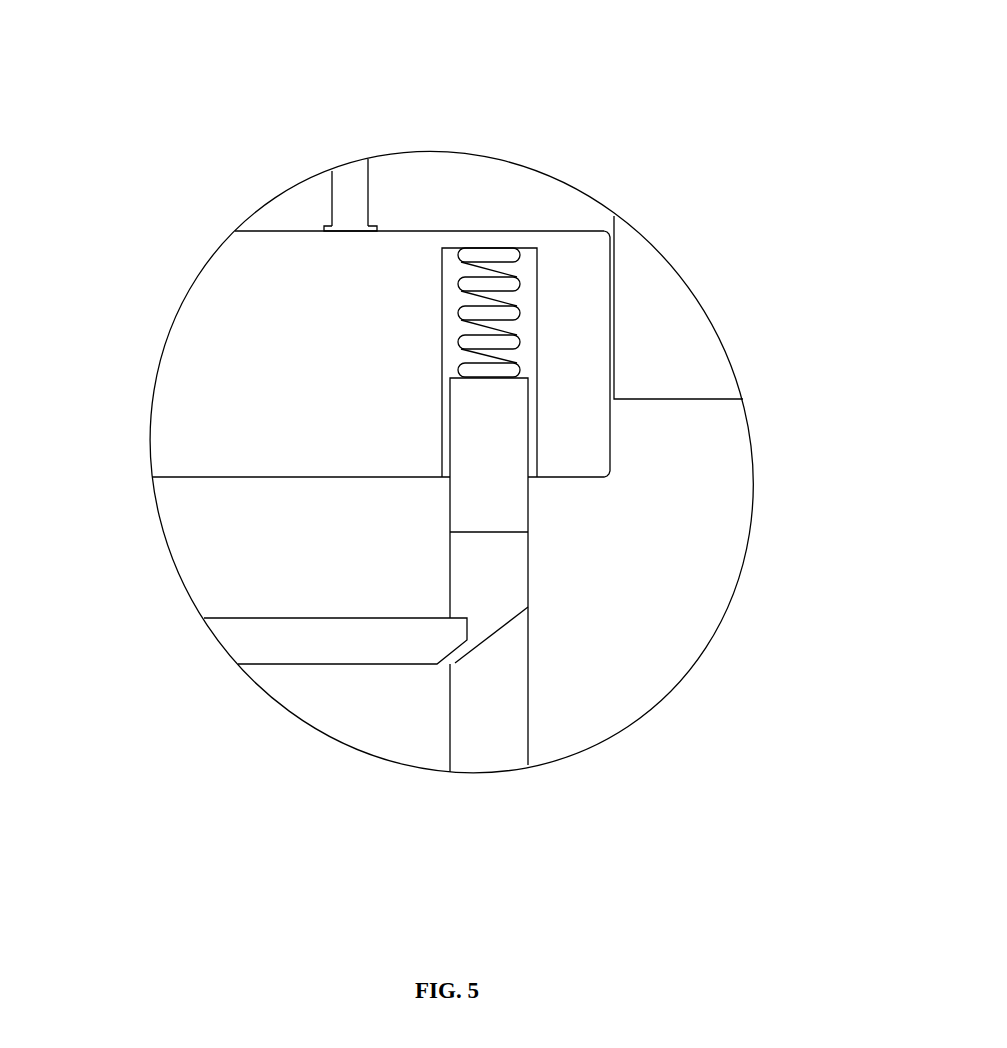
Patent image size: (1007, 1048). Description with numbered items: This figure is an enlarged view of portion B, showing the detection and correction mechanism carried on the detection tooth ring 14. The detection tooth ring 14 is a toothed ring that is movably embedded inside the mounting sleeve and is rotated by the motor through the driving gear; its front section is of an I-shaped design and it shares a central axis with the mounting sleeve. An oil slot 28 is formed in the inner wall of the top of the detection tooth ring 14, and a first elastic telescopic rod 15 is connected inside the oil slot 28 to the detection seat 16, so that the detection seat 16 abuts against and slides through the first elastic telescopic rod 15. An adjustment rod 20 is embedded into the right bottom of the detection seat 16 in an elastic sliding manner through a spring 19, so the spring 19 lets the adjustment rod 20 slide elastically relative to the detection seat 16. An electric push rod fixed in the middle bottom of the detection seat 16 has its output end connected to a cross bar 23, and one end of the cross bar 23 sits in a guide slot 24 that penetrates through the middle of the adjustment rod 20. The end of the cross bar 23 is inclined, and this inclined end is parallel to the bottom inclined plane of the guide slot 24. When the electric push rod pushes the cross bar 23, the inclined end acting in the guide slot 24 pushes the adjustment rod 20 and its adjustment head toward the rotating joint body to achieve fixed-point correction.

The detection tooth ring 14 is at (755, 307).
The first elastic telescopic rod 15 is at (301, 123).
The detection seat 16 is at (317, 330).
The spring 19 is at (646, 236).
The adjustment rod 20 is at (695, 575).
The cross bar 23 is at (282, 728).
The guide slot 24 is at (605, 691).
The oil slot 28 is at (433, 130).
The portion B is at (452, 461).